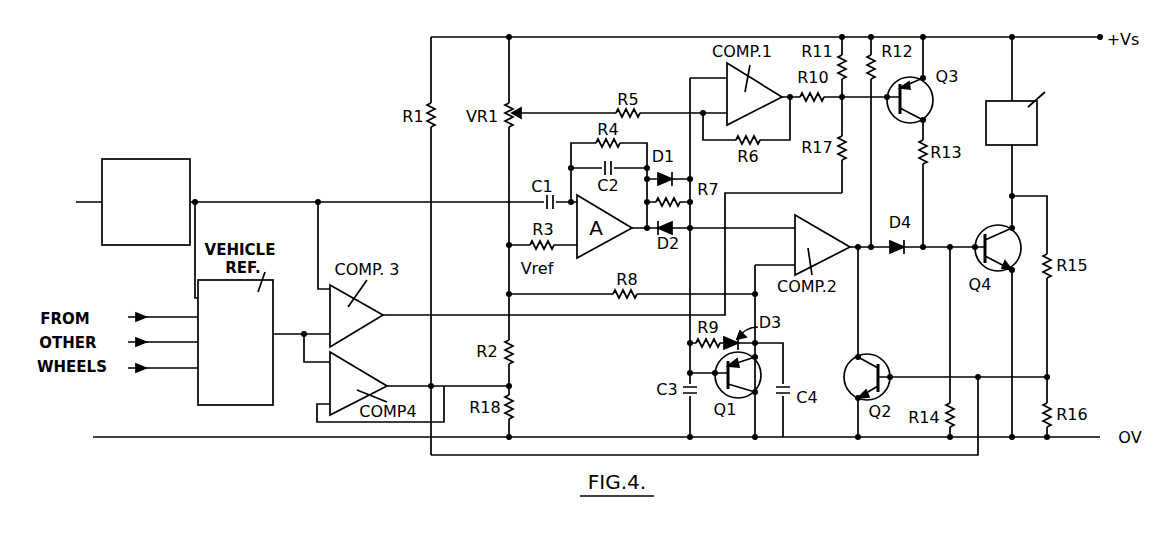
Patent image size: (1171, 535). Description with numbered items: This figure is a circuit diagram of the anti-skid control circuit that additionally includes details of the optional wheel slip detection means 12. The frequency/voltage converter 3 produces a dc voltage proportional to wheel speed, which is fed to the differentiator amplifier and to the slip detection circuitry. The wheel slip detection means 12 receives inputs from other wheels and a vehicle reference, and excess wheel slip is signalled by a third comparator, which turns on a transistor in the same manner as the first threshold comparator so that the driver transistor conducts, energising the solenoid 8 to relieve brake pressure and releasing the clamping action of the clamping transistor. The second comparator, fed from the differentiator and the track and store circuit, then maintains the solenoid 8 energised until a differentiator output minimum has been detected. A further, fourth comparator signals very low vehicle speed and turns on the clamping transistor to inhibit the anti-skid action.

The frequency/voltage converter 3 is at (147, 151).
The solenoid 8 is at (1038, 118).
The wheel slip detection means 12 is at (301, 444).